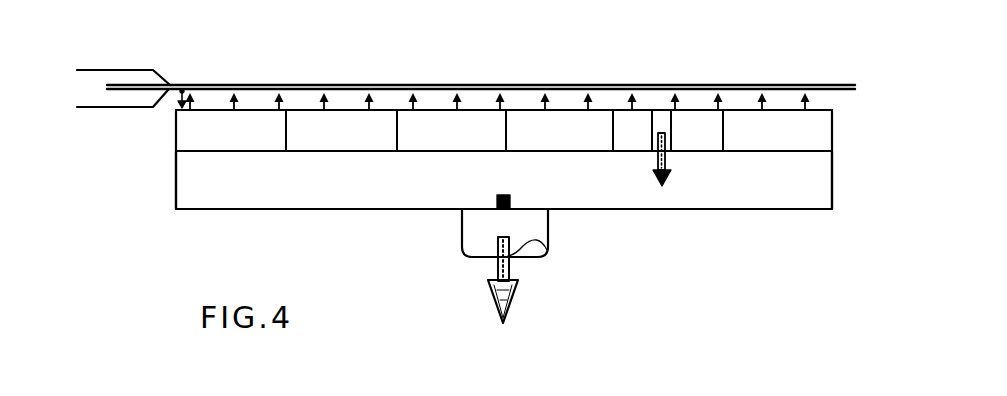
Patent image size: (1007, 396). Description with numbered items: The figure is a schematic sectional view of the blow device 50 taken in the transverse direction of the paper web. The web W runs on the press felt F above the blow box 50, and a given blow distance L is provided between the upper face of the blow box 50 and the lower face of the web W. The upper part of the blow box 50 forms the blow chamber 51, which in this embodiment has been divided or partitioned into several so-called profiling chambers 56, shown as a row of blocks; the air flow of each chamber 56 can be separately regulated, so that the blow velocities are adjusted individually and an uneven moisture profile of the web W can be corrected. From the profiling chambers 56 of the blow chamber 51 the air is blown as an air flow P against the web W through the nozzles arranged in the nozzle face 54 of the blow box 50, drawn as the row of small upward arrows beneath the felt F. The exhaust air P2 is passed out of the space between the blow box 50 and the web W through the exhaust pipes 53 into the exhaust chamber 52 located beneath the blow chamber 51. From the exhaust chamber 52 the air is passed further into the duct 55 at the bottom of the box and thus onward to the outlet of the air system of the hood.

The blow device 50 is at (652, 78).
The blow chamber 51 is at (817, 132).
The exhaust chamber 52 is at (613, 200).
The exhaust pipes 53 is at (672, 128).
The nozzle face 54 is at (438, 104).
The duct 55 is at (472, 227).
The profiling chambers 56 is at (414, 147).
The press felt F is at (123, 72).
The web W is at (469, 114).
The blow distance L is at (178, 96).
The air flow P is at (806, 102).
The exhaust air P2 is at (493, 268).